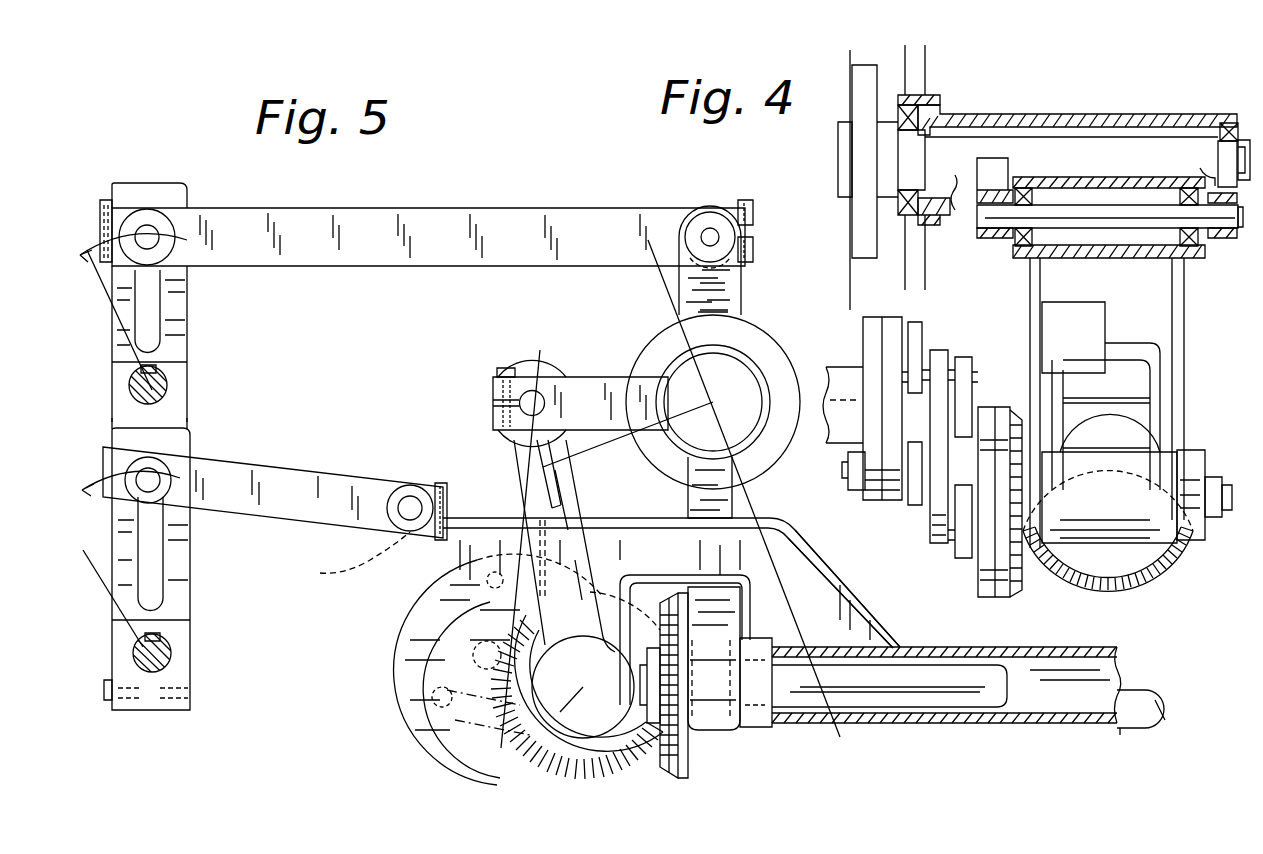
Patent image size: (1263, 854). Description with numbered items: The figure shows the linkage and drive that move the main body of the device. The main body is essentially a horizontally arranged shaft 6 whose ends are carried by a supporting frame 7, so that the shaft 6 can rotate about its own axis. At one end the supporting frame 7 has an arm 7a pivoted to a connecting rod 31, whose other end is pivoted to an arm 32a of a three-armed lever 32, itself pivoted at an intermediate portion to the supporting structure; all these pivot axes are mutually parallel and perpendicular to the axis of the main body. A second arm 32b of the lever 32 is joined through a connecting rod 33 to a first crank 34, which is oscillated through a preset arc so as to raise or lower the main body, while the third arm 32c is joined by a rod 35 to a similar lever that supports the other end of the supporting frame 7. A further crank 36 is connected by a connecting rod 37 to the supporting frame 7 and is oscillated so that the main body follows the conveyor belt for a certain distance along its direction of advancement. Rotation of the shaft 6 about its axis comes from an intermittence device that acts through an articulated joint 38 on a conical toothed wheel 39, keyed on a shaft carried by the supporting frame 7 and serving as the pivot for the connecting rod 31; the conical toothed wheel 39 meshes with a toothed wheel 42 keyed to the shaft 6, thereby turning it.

In FIG. 5, the shaft 6 is at (892, 680).
In FIG. 5, the supporting frame 7 is at (978, 648).
In FIG. 5, the arm 7a is at (815, 587).
In FIG. 5, the connecting rod 31 is at (562, 513).
In FIG. 4, the connecting rod 31 is at (1202, 463).
In FIG. 5, the lever 32 is at (782, 347).
In FIG. 4, the lever 32 is at (1188, 111).
In FIG. 5, the arm 32a is at (585, 390).
In FIG. 4, the arm 32a is at (1232, 243).
In FIG. 5, the arm 32b is at (728, 295).
In FIG. 4, the arm 32b is at (927, 72).
In FIG. 5, the arm 32c is at (722, 505).
In FIG. 4, the arm 32c is at (925, 270).
In FIG. 5, the connecting rod 33 is at (383, 220).
In FIG. 5, the first crank 34 is at (175, 324).
In FIG. 5, the rod 35 is at (1135, 702).
In FIG. 5, the crank 36 is at (175, 594).
In FIG. 5, the connecting rod 37 is at (282, 480).
In FIG. 4, the articulated joint 38 is at (968, 343).
In FIG. 4, the conical toothed wheel 39 is at (1025, 578).
In FIG. 4, the toothed wheel 42 is at (1140, 585).